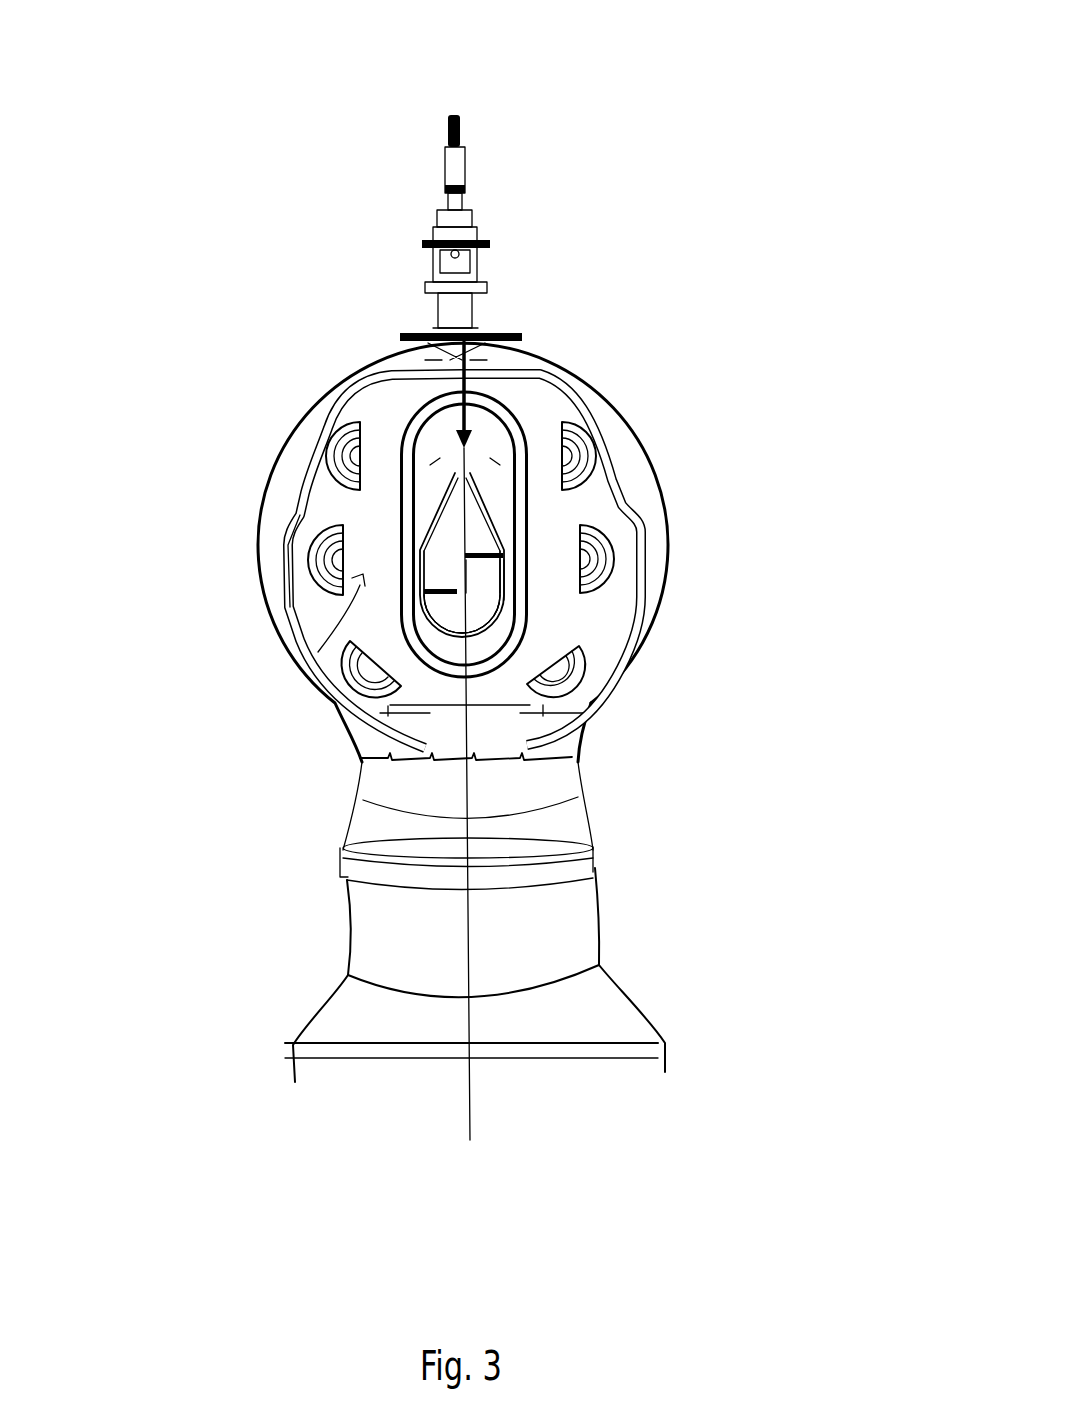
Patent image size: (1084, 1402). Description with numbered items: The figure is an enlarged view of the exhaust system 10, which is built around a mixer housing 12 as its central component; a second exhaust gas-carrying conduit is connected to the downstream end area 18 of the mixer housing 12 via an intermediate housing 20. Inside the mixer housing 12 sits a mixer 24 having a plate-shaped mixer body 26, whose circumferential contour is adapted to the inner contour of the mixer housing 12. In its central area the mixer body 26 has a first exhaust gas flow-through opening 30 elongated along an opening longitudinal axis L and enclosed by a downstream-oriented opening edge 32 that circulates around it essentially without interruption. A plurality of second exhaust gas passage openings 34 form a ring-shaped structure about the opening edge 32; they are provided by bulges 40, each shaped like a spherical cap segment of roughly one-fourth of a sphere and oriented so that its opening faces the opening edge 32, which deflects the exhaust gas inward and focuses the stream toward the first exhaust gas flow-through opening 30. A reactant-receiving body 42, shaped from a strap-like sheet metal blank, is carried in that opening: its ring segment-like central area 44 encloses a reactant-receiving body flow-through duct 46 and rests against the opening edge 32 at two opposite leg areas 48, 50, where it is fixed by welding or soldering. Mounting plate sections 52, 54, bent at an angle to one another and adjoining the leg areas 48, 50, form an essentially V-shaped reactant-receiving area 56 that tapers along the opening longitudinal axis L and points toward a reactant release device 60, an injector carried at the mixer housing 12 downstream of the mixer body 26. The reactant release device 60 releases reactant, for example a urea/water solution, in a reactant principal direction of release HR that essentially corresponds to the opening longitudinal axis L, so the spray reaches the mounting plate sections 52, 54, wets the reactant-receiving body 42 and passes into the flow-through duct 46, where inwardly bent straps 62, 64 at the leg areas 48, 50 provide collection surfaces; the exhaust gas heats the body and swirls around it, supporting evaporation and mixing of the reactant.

The exhaust system 10 is at (622, 110).
The mixer housing 12 is at (628, 684).
The downstream end area 18 is at (590, 822).
The intermediate housing 20 is at (600, 890).
The mixer 24 is at (554, 336).
The mixer body 26 is at (595, 503).
The first exhaust gas flow-through opening 30 is at (423, 448).
The opening edge 32 is at (407, 493).
The second exhaust gas passage openings 34 is at (318, 652).
The bulges 40 is at (320, 587).
The reactant-receiving body 42 is at (440, 600).
The central area 44 is at (485, 633).
The reactant-receiving body flow-through duct 46 is at (478, 537).
The leg area 48 is at (512, 597).
The leg area 50 is at (420, 567).
The mounting plate section 52 is at (483, 503).
The mounting plate section 54 is at (443, 493).
The reactant-receiving area 56 is at (500, 444).
The reactant release device 60 is at (470, 210).
The strap 62 is at (485, 563).
The strap 64 is at (445, 646).
The opening longitudinal axis L is at (467, 615).
The reactant principal direction of release HR is at (475, 388).